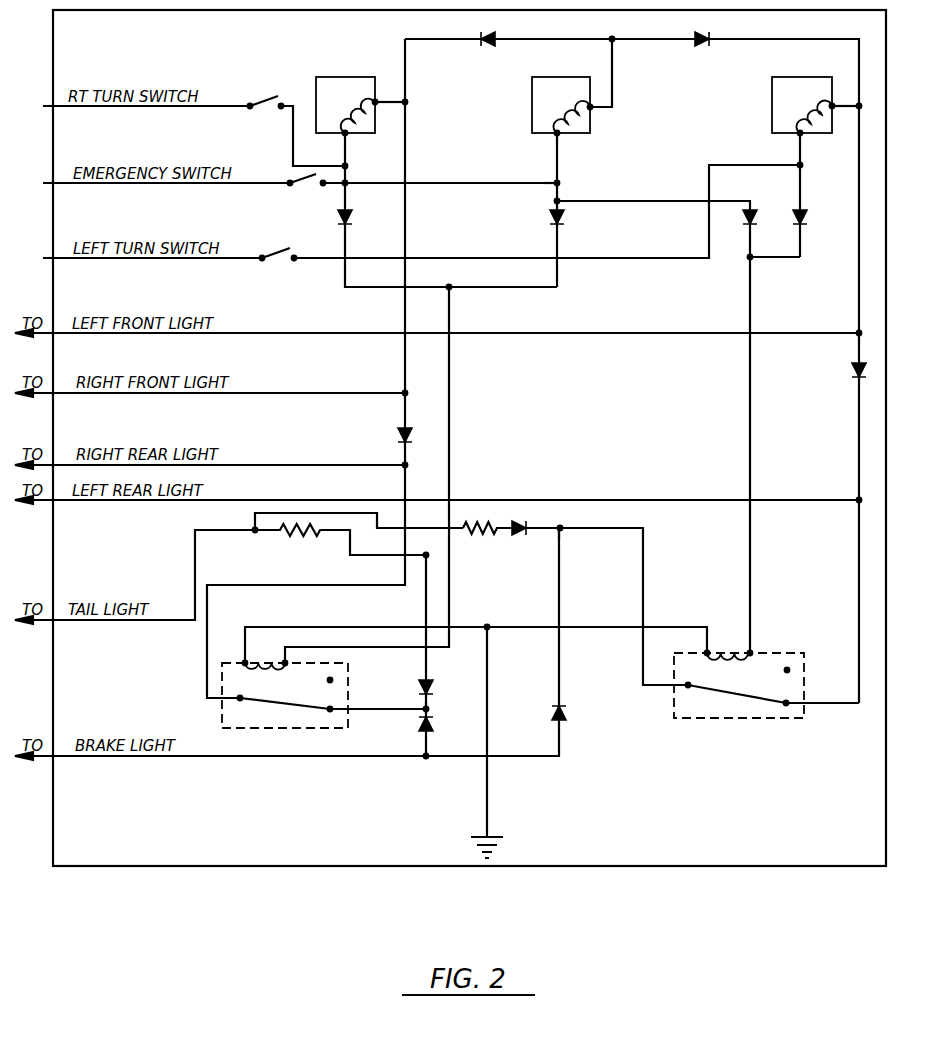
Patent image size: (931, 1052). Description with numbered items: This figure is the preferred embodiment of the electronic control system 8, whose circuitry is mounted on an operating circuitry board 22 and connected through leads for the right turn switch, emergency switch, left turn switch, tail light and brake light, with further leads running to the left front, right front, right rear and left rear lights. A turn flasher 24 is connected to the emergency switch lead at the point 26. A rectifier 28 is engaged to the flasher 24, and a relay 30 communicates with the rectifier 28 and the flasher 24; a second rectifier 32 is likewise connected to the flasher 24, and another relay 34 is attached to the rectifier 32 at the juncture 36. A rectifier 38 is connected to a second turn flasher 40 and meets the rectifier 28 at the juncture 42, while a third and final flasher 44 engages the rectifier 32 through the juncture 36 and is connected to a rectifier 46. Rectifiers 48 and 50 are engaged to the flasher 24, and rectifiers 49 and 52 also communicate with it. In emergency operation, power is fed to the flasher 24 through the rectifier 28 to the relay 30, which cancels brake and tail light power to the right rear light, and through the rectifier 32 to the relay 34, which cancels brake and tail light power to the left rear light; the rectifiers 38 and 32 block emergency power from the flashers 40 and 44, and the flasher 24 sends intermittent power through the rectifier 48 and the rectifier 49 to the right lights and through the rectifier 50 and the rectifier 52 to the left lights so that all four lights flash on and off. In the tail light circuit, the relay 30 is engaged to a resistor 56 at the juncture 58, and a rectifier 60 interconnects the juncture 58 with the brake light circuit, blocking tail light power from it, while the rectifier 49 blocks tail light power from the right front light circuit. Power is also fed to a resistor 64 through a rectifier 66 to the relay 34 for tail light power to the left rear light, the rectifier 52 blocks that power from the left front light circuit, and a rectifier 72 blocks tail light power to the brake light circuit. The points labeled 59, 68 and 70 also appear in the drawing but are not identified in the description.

The electronic control system 8 is at (722, 866).
The operating circuitry board 22 is at (633, 819).
The turn flasher 24 is at (561, 80).
The connection point 26 is at (561, 183).
The rectifier 28 is at (549, 218).
The relay 30 is at (272, 723).
The rectifier 32 is at (755, 216).
The relay 34 is at (766, 695).
The juncture 36 is at (748, 260).
The rectifier 38 is at (337, 216).
The turn flasher 40 is at (338, 113).
The juncture 42 is at (450, 286).
The flasher 44 is at (797, 113).
The rectifier 46 is at (806, 211).
The rectifier 48 is at (498, 44).
The rectifier 49 is at (412, 431).
The rectifier 50 is at (712, 35).
The rectifier 52 is at (854, 362).
The resistor 56 is at (318, 536).
The juncture 58 is at (428, 713).
The diode CR10 59 is at (418, 683).
The rectifier 60 is at (418, 728).
The resistor 64 is at (495, 534).
The rectifier 66 is at (527, 525).
The junction 68 is at (253, 532).
The junction 70 is at (562, 531).
The rectifier 72 is at (566, 719).